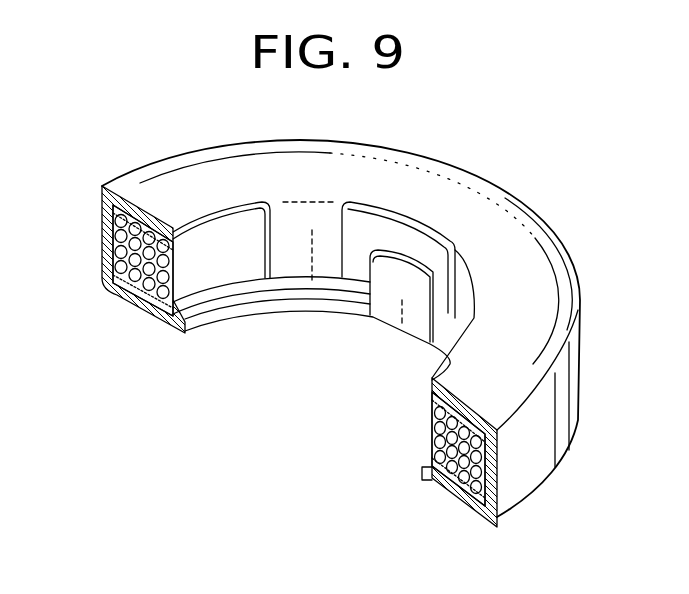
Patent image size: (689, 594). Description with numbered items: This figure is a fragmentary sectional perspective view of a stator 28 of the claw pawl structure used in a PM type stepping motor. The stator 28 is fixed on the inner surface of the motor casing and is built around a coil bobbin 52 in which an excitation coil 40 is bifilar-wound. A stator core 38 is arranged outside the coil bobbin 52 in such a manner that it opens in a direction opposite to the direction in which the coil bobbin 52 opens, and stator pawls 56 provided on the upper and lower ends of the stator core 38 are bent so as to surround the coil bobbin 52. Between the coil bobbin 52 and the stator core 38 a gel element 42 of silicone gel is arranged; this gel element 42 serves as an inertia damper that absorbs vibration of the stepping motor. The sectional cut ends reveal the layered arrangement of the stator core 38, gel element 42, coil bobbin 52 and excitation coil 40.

The stator 28 is at (540, 140).
The stator core 38 is at (187, 163).
The excitation coil 40 is at (117, 249).
The gel element 42 is at (116, 212).
The coil bobbin 52 is at (207, 278).
The stator pawl 56 is at (298, 270).